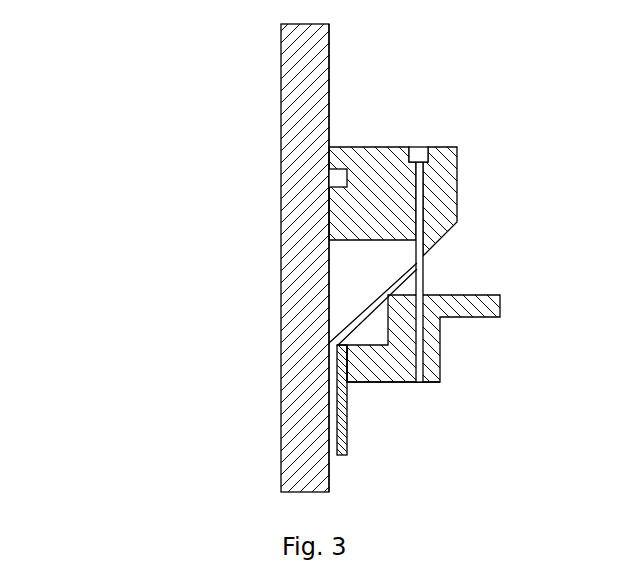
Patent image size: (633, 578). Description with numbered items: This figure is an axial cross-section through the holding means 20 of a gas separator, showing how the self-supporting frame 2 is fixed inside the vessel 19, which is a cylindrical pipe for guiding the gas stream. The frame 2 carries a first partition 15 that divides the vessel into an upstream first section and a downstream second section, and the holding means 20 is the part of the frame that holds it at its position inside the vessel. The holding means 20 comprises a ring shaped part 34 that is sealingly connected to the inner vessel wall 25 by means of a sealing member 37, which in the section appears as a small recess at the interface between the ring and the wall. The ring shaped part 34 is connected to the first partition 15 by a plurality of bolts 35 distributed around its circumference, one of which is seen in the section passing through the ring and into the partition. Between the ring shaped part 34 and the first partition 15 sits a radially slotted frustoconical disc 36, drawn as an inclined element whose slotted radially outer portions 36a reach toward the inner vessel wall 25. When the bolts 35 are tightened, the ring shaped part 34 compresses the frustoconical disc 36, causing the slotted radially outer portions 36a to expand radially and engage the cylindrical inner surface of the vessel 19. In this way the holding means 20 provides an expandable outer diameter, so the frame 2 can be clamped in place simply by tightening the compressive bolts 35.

The self-supporting frame 2 is at (345, 384).
The first partition 15 is at (367, 360).
The vessel 19 is at (299, 152).
The holding means 20 is at (515, 163).
The inner vessel wall 25 is at (332, 110).
The ring shaped part 34 is at (355, 215).
The bolts 35 is at (416, 252).
The radially slotted frustoconical disc 36 is at (375, 282).
The slotted radially outer portions 36a is at (365, 313).
The sealing member 37 is at (339, 180).